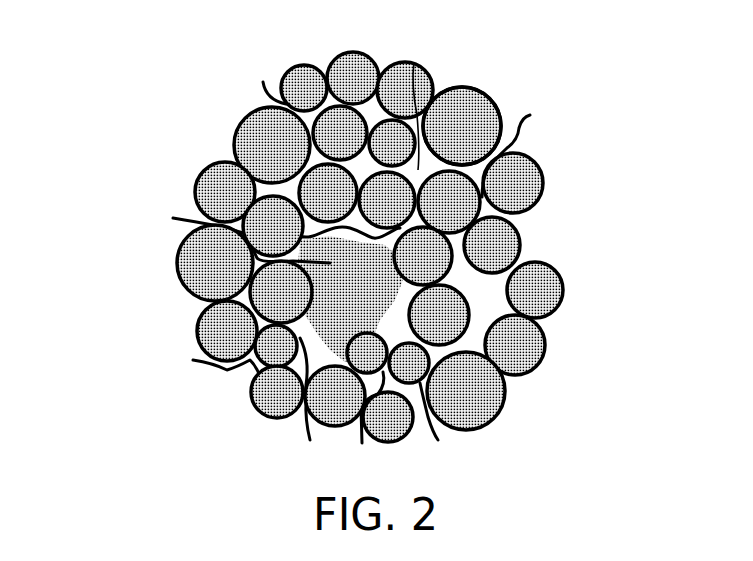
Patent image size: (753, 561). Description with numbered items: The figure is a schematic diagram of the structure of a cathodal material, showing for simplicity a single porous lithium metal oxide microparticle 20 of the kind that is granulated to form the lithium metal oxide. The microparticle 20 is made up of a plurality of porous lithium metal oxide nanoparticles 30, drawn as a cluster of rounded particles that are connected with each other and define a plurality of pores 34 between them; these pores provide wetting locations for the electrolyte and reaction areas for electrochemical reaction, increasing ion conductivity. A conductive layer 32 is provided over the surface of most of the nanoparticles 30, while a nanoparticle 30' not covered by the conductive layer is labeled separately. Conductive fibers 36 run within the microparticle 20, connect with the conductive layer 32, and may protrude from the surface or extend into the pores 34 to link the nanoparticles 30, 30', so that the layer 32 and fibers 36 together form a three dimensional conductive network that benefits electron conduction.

The porous lithium metal oxide microparticle 20 is at (70, 91).
The porous lithium metal oxide nanoparticle 30 is at (490, 100).
The porous lithium metal oxide nanoparticle not covered by the conductive layer 30' is at (166, 263).
The conductive layer 32 is at (465, 88).
The pores 34 is at (414, 62).
The conductive fibers 36 is at (523, 127).